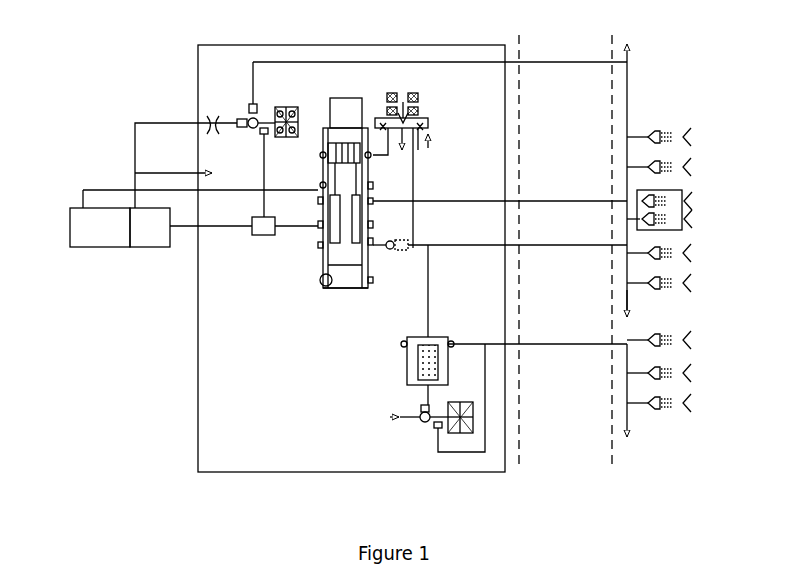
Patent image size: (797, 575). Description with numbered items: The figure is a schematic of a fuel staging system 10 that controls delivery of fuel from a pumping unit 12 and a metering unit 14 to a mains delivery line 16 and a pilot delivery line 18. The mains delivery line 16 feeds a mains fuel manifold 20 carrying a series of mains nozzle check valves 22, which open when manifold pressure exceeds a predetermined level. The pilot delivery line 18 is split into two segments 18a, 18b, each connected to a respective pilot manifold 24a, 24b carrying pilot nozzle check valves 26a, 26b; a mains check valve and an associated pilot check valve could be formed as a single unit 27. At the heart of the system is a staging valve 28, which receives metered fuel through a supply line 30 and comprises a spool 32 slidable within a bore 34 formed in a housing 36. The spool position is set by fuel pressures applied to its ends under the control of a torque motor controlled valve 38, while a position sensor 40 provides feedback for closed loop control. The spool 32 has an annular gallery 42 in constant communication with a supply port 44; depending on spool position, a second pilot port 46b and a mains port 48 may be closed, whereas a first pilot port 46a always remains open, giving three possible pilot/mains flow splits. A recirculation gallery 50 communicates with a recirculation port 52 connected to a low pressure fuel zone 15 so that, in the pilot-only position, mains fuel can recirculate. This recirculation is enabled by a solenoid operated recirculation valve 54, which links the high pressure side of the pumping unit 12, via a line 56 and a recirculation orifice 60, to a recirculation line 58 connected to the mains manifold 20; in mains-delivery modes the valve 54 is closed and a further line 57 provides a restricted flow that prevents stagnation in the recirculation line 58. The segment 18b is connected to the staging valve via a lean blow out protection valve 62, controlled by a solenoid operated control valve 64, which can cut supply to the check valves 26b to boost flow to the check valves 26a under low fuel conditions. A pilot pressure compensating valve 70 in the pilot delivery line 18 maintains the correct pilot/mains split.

The fuel staging system 10 is at (236, 475).
The pumping unit 12 is at (100, 256).
The metering unit 14 is at (150, 256).
The low pressure fuel zone 15 is at (96, 233).
The mains delivery line 16 is at (523, 200).
The pilot delivery line 18 is at (475, 268).
The segment of pilot delivery line 18a is at (543, 247).
The segment of pilot delivery line 18b is at (573, 340).
The mains fuel manifold 20 is at (630, 90).
The mains nozzle check valves 22 is at (690, 160).
The pilot manifold 24a is at (632, 245).
The pilot manifold 24b is at (632, 348).
The pilot nozzle check valves 26a is at (690, 268).
The pilot nozzle check valves 26b is at (690, 388).
The single unit 27 is at (683, 192).
The staging valve 28 is at (338, 300).
The supply line 30 is at (235, 233).
The spool 32 is at (336, 252).
The bore 34 is at (330, 291).
The housing 36 is at (320, 236).
The torque motor controlled valve 38 is at (424, 93).
The position sensor 40 is at (373, 201).
The annular gallery 42 is at (362, 210).
The supply port 44 is at (318, 214).
The first pilot port 46a is at (380, 258).
The second pilot port 46b is at (373, 262).
The mains port 48 is at (388, 196).
The recirculation gallery 50 is at (328, 158).
The recirculation port 52 is at (328, 183).
The recirculation valve 54 is at (266, 108).
The line 56 is at (134, 148).
The further line 57 is at (262, 145).
The recirculation line 58 is at (395, 62).
The recirculation orifice 60 is at (210, 112).
The lean blow out protection valve 62 is at (404, 372).
The solenoid operated control valve 64 is at (415, 410).
The pilot pressure compensating valve 70 is at (408, 258).